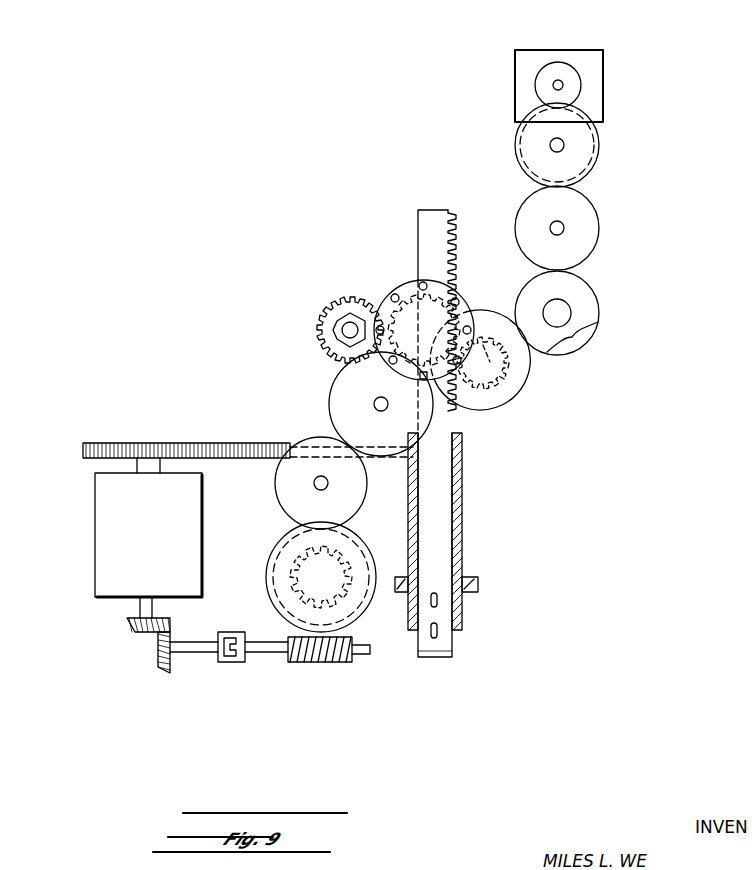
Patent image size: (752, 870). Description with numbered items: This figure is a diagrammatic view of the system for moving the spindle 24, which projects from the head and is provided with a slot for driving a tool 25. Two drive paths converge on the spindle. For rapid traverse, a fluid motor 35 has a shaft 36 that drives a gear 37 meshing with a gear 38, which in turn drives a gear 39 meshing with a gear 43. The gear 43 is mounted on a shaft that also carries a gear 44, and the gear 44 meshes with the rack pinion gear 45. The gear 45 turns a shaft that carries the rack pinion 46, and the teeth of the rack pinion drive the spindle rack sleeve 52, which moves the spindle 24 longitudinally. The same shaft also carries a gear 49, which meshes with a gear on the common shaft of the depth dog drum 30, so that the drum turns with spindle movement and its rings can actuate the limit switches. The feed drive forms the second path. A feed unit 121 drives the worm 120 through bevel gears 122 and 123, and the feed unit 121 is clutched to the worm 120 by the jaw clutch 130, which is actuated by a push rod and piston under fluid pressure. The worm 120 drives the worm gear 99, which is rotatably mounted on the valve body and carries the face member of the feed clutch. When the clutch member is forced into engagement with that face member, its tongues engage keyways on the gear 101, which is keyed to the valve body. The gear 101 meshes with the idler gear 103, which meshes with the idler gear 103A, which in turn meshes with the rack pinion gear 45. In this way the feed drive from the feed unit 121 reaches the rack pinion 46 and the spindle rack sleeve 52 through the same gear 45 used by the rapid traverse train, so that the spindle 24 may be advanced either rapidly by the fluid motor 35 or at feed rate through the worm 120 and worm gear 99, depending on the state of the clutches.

The spindle 24 is at (437, 542).
The tool 25 is at (437, 636).
The depth dog drum 30 is at (402, 277).
The fluid motor 35 is at (592, 74).
The shaft 36 is at (563, 81).
The gear 37 is at (551, 72).
The gear 38 is at (600, 148).
The gear 39 is at (599, 228).
The gear 43 is at (585, 298).
The gear 44 is at (585, 338).
The rack pinion gear 45 is at (498, 395).
The rack pinion 46 is at (512, 379).
The gear 49 is at (484, 345).
The spindle rack sleeve 52 is at (437, 222).
The worm gear 99 is at (358, 538).
The gear 101 is at (265, 580).
The idler gear 103 is at (276, 482).
The idler gear 103A is at (345, 395).
The worm 120 is at (330, 663).
The feed unit 121 is at (120, 537).
The bevel gear 122 is at (157, 671).
The bevel gear 123 is at (127, 627).
The jaw clutch 130 is at (240, 663).